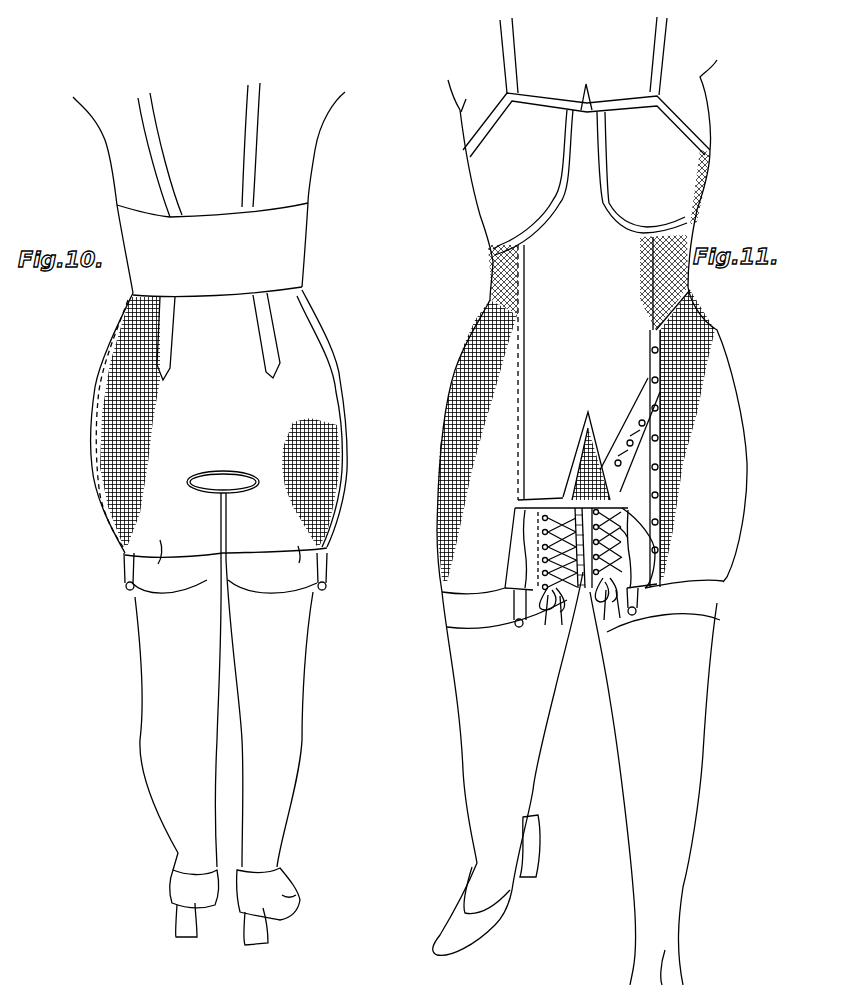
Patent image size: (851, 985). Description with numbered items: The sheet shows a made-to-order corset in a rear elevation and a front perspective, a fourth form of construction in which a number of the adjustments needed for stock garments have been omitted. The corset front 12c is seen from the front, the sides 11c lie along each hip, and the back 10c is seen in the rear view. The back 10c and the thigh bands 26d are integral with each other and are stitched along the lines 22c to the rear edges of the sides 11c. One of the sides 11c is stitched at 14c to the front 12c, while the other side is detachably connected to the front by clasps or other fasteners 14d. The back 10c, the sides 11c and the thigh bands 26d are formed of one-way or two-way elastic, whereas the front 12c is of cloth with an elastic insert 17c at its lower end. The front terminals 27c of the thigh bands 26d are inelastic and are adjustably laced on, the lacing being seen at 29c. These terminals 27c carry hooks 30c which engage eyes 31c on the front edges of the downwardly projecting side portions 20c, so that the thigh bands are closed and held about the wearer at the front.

In FIG. 10, the back 10c is at (219, 383).
In FIG. 10, the stitching lines 22c is at (334, 408).
In FIG. 10, the thigh bands 26d is at (128, 588).
In FIG. 11, the thigh bands 26d is at (583, 592).
In FIG. 11, the corset front 12c is at (586, 214).
In FIG. 11, the stitching 14c is at (513, 390).
In FIG. 11, the sides 11c is at (480, 437).
In FIG. 11, the front terminals 27c is at (527, 548).
In FIG. 11, the lacing 29c is at (577, 480).
In FIG. 11, the elastic insert 17c is at (598, 468).
In FIG. 11, the clasps or fasteners 14d is at (653, 412).
In FIG. 11, the eyes 31c is at (617, 530).
In FIG. 11, the hooks 30c is at (627, 533).
In FIG. 11, the downwardly projecting side portions 20c is at (437, 592).